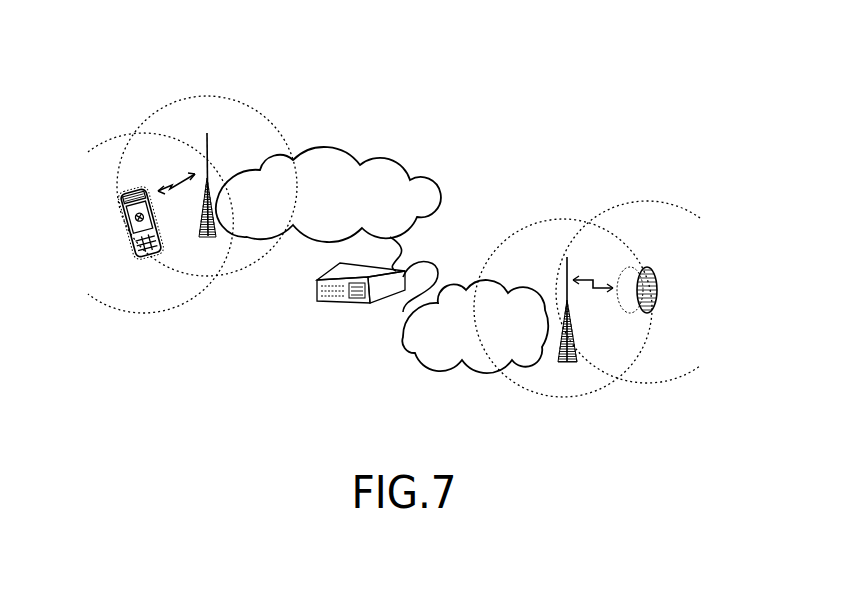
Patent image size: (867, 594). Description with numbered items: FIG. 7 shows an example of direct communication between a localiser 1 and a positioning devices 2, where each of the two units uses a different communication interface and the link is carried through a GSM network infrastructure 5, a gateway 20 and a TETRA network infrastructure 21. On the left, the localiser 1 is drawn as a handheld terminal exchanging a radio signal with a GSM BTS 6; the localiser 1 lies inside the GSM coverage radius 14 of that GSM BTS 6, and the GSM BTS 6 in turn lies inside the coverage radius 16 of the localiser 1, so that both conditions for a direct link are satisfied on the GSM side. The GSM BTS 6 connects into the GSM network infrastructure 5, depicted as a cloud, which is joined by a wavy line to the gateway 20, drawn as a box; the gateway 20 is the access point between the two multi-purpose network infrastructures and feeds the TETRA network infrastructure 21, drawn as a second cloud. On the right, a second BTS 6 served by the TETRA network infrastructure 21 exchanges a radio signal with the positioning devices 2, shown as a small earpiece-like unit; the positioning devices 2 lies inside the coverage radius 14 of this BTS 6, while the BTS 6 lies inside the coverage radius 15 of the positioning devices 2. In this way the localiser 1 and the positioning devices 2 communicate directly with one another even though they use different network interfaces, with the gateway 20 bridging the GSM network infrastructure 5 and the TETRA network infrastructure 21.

The localiser 1 is at (140, 263).
The positioning devices 2 is at (657, 287).
The GSM network infrastructure 5 is at (333, 168).
The GSM BTS 6 is at (206, 130).
The GSM coverage radius 14 is at (260, 112).
The GSM coverage radius 15 is at (652, 200).
The GSM coverage radius 16 is at (118, 138).
The gateway 20 is at (337, 303).
The TETRA network infrastructure 21 is at (480, 280).